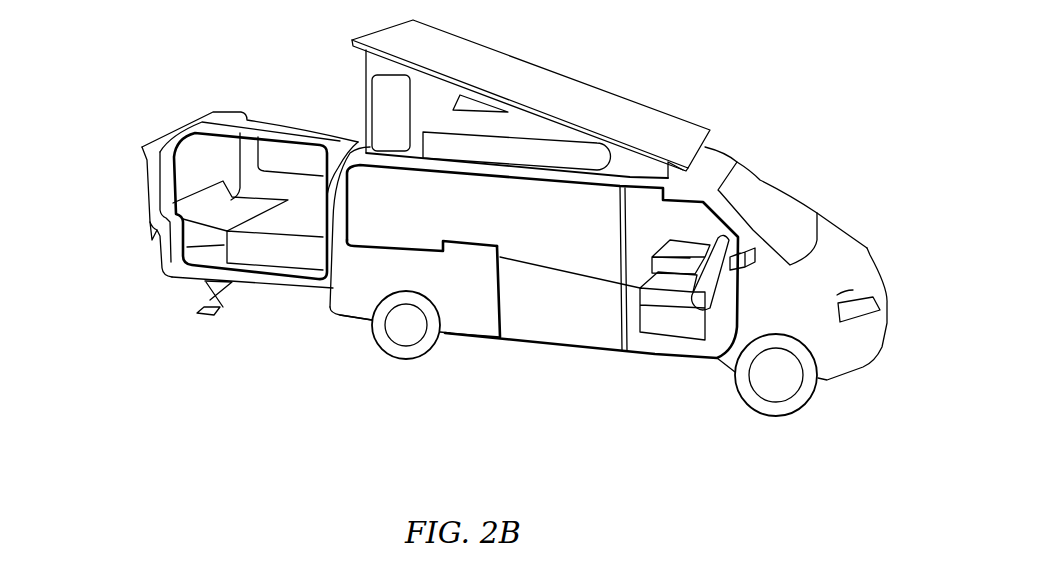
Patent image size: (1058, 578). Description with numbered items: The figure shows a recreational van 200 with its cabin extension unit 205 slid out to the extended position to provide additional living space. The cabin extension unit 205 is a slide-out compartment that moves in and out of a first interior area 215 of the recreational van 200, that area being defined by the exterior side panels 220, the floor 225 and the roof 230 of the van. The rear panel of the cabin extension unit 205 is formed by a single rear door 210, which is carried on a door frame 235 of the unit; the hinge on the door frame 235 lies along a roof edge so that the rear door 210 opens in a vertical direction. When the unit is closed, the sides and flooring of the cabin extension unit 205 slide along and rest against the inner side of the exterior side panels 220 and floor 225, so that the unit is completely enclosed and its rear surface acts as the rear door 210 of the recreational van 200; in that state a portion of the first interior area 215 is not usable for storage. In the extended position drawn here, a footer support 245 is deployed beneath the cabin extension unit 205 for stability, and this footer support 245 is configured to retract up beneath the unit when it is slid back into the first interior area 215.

The recreational van 200 is at (809, 53).
The cabin extension unit 205 is at (232, 98).
The rear door 210 is at (147, 187).
The first interior area 215 is at (583, 238).
The exterior side panels 220 is at (353, 267).
The floor 225 is at (493, 337).
The roof 230 is at (648, 107).
The door frame 235 is at (148, 243).
The footer support 245 is at (205, 297).